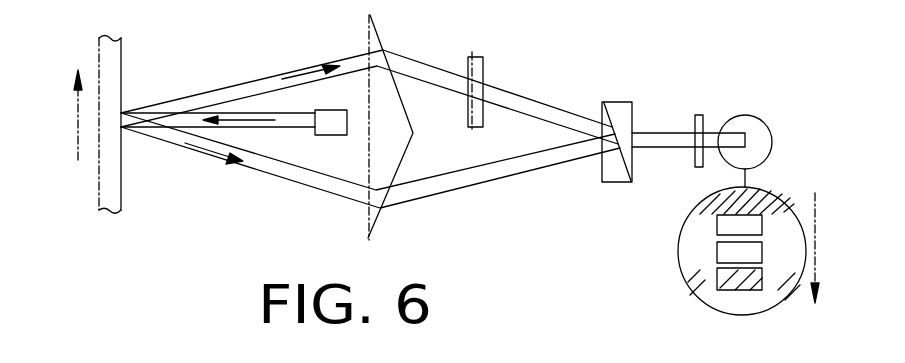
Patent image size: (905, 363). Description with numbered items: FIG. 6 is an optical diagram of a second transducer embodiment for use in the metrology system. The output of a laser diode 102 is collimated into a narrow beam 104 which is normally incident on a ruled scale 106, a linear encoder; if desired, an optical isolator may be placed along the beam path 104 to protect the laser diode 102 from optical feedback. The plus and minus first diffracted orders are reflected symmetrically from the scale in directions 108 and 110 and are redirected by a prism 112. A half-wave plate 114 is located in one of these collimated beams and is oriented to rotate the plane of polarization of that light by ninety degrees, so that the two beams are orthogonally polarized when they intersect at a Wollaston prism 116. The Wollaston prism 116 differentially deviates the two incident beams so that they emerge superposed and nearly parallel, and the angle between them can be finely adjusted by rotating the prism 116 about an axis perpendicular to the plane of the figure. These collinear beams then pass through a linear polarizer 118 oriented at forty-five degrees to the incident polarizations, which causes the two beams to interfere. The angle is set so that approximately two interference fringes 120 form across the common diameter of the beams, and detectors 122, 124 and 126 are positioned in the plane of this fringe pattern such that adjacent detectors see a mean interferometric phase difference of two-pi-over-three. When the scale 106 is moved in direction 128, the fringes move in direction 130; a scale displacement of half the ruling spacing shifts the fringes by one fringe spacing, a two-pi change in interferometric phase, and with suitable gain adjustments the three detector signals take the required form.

The laser diode 102 is at (331, 138).
The narrow beam 104 is at (272, 110).
The ruled scale 106 is at (112, 72).
The direction of first diffracted order 108 is at (260, 85).
The direction of second diffracted order 110 is at (185, 144).
The prism 112 is at (392, 110).
The half-wave plate 114 is at (484, 78).
The Wollaston prism 116 is at (626, 118).
The linear polarizer 118 is at (698, 165).
The interference fringes 120 is at (695, 215).
The detector 122 is at (750, 230).
The detector 124 is at (720, 265).
The detector 126 is at (755, 290).
The direction of scale movement 128 is at (77, 130).
The direction of fringe movement 130 is at (816, 246).